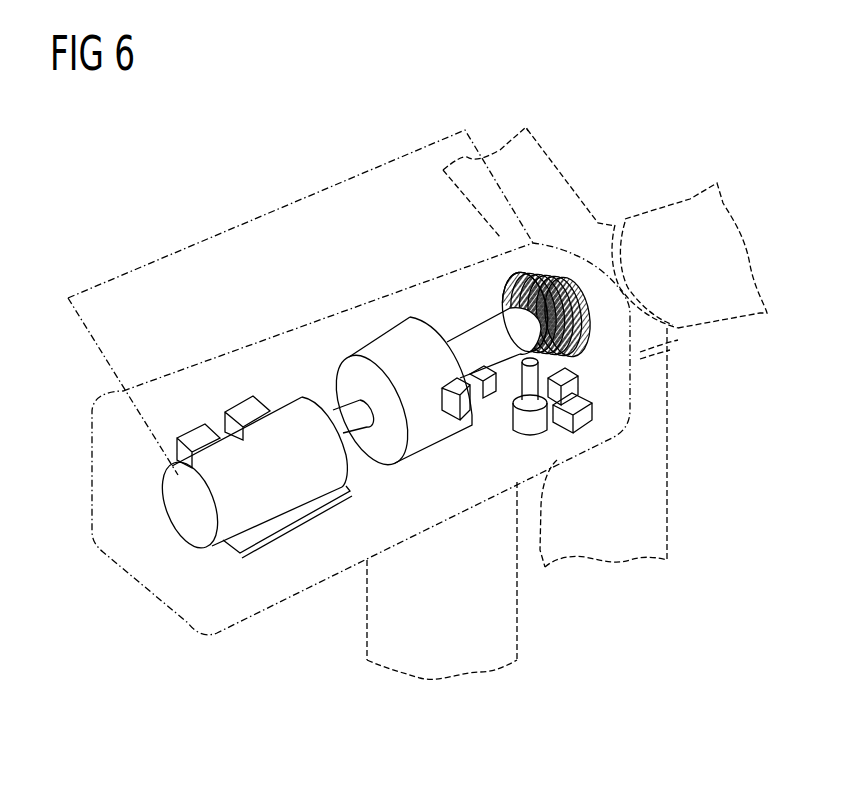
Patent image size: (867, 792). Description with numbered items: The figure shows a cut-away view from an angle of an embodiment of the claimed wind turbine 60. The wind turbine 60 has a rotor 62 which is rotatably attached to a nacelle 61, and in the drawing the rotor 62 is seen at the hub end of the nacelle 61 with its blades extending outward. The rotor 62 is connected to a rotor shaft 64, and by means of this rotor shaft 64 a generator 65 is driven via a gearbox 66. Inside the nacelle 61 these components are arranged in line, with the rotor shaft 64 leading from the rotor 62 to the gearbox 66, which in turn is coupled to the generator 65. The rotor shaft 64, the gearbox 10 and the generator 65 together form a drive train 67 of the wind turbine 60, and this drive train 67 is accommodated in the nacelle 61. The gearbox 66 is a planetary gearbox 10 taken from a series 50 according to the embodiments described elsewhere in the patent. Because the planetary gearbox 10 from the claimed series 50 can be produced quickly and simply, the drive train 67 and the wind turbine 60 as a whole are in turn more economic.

The planetary gearbox 10 is at (379, 350).
The series 50 is at (379, 350).
The wind turbine 60 is at (158, 183).
The nacelle 61 is at (273, 337).
The rotor 62 is at (643, 510).
The rotor shaft 64 is at (487, 337).
The generator 65 is at (186, 514).
The gearbox 66 is at (387, 355).
The drive train 67 is at (273, 213).